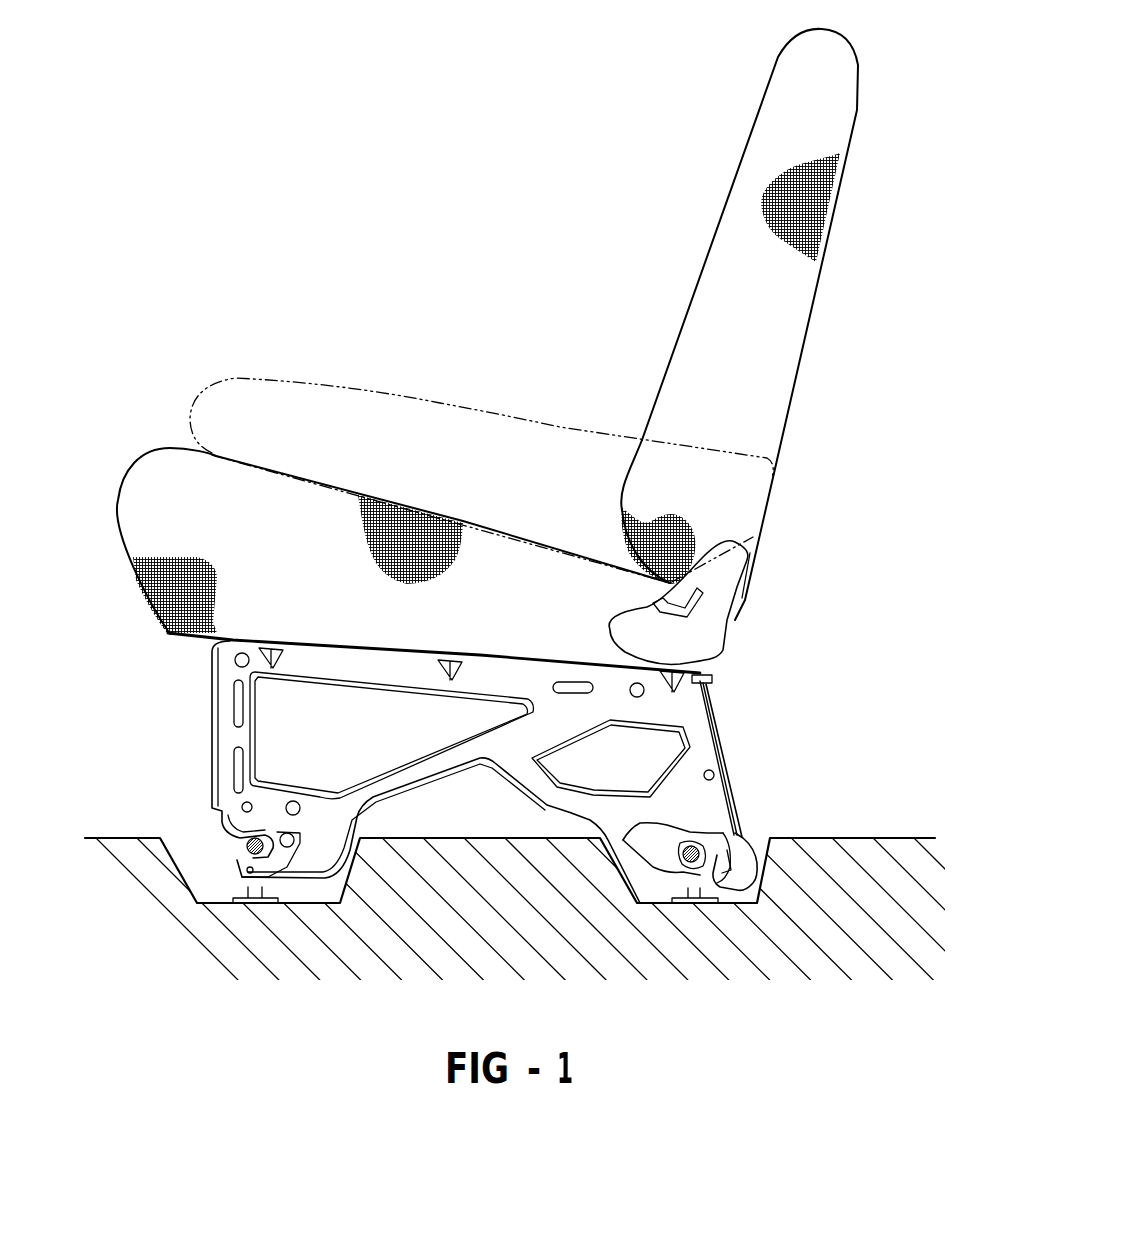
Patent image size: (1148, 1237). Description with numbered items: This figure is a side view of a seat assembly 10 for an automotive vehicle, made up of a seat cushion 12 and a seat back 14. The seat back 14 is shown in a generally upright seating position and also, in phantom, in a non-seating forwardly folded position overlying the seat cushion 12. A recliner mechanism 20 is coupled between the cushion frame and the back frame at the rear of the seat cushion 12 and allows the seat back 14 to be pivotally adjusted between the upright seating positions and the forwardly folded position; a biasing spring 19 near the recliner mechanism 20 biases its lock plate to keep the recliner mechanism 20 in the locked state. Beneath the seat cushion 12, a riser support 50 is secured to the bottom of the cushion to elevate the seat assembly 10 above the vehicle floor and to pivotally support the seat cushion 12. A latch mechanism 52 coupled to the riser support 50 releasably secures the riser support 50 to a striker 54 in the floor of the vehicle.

The seat assembly 10 is at (200, 311).
The seat cushion 12 is at (143, 590).
The seat back 14 is at (712, 262).
The biasing spring 19 is at (625, 614).
The recliner mechanism 20 is at (723, 607).
The riser support 50 is at (213, 723).
The latch mechanism 52 is at (678, 862).
The striker 54 is at (690, 848).